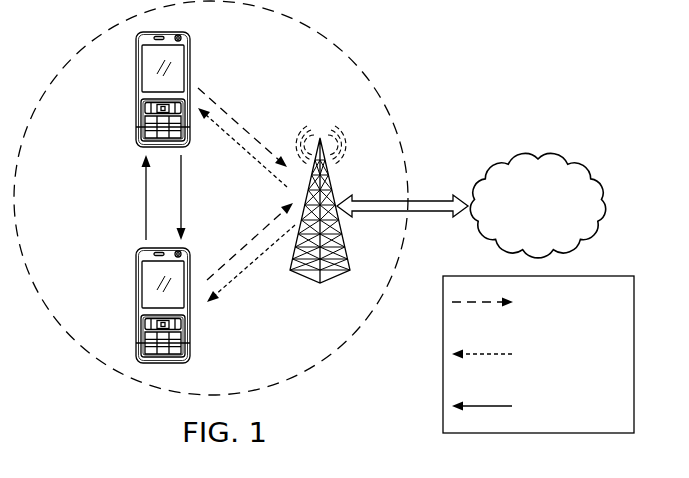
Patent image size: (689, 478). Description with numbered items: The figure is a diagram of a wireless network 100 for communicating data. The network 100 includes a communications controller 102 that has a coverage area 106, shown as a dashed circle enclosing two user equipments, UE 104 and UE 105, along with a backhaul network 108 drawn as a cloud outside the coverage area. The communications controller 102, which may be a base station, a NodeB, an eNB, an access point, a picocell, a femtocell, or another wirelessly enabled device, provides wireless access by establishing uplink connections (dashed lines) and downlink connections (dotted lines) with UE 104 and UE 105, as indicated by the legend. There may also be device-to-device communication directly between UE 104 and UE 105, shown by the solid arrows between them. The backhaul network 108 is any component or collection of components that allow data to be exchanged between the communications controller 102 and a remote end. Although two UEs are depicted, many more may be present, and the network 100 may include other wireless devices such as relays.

The network 100 is at (452, 88).
The communications controller 102 is at (333, 283).
The UE 104 is at (136, 90).
The UE 105 is at (136, 288).
The coverage area 106 is at (82, 39).
The backhaul network 108 is at (541, 152).